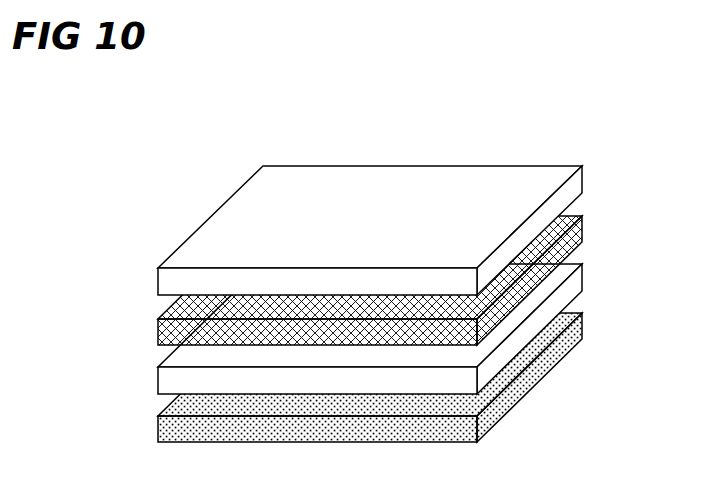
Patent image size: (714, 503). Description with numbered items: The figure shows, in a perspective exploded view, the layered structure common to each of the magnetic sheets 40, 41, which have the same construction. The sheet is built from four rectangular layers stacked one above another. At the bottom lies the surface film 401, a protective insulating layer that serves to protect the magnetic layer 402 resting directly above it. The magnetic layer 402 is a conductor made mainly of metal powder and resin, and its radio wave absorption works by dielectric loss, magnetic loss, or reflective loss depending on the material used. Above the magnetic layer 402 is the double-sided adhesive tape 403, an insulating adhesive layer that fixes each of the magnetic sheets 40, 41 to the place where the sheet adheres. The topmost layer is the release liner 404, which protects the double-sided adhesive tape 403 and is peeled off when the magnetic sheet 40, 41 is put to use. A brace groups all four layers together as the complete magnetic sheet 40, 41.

The magnetic sheet 40 is at (369, 304).
The magnetic sheet 41 is at (369, 304).
The surface film 401 is at (157, 436).
The magnetic layer 402 is at (157, 387).
The double-sided adhesive tape 403 is at (157, 337).
The release liner 404 is at (157, 286).